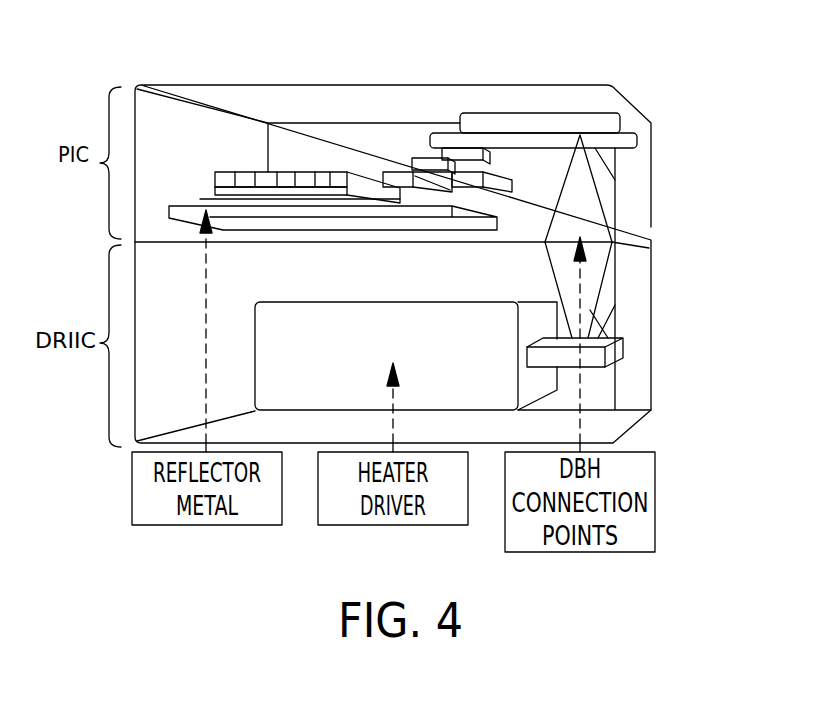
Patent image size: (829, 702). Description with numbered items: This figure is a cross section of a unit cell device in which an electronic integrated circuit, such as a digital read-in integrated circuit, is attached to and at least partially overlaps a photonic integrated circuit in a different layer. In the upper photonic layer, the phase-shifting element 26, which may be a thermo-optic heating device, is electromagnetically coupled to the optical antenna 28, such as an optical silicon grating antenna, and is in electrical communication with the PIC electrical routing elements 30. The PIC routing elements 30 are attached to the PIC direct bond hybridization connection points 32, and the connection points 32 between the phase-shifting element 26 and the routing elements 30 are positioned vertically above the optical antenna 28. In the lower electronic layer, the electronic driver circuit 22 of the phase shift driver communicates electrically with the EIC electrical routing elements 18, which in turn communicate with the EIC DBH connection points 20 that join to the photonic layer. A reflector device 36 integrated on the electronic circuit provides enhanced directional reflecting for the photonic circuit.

The EIC electrical routing elements 18 is at (615, 352).
The EIC direct bond hybridization (DBH) connection points 20 is at (580, 240).
The electronic driver circuit 22 is at (379, 342).
The phase-shifting element 26 is at (422, 158).
The optical antenna 28 is at (257, 183).
The PIC electrical routing elements 30 is at (448, 133).
The PIC direct bond hybridization (DBH) connection points 32 is at (697, 202).
The reflector device 36 is at (184, 212).